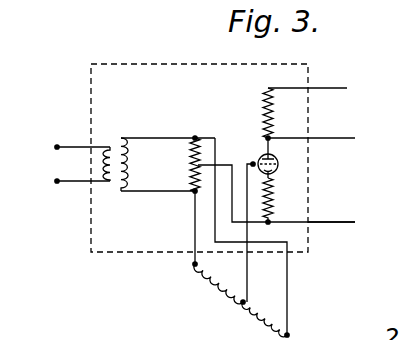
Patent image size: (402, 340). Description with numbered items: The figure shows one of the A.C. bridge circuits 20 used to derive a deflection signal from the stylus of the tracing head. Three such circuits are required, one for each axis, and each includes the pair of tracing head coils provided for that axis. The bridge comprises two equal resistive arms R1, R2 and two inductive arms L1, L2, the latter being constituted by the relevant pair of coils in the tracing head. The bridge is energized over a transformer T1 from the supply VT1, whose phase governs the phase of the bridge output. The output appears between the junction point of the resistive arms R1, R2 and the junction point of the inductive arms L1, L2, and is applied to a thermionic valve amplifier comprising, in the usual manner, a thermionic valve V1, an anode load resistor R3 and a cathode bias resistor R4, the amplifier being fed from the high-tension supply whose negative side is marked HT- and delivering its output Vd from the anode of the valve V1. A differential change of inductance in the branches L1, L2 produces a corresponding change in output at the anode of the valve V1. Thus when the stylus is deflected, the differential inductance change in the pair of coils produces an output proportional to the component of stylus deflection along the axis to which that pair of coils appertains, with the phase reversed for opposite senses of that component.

The bridge circuit 20 is at (150, 252).
The supply VT1 is at (70, 149).
The transformer T1 is at (159, 156).
The resistive arm R1 is at (190, 156).
The resistive arm R2 is at (190, 178).
The anode load resistor R3 is at (274, 119).
The cathode bias resistor R4 is at (278, 200).
The thermionic valve V1 is at (278, 170).
The inductive arm L1 is at (265, 313).
The inductive arm L2 is at (218, 279).
The output voltage terminal Vd is at (310, 131).
The negative high-tension supply terminal HT- is at (331, 231).